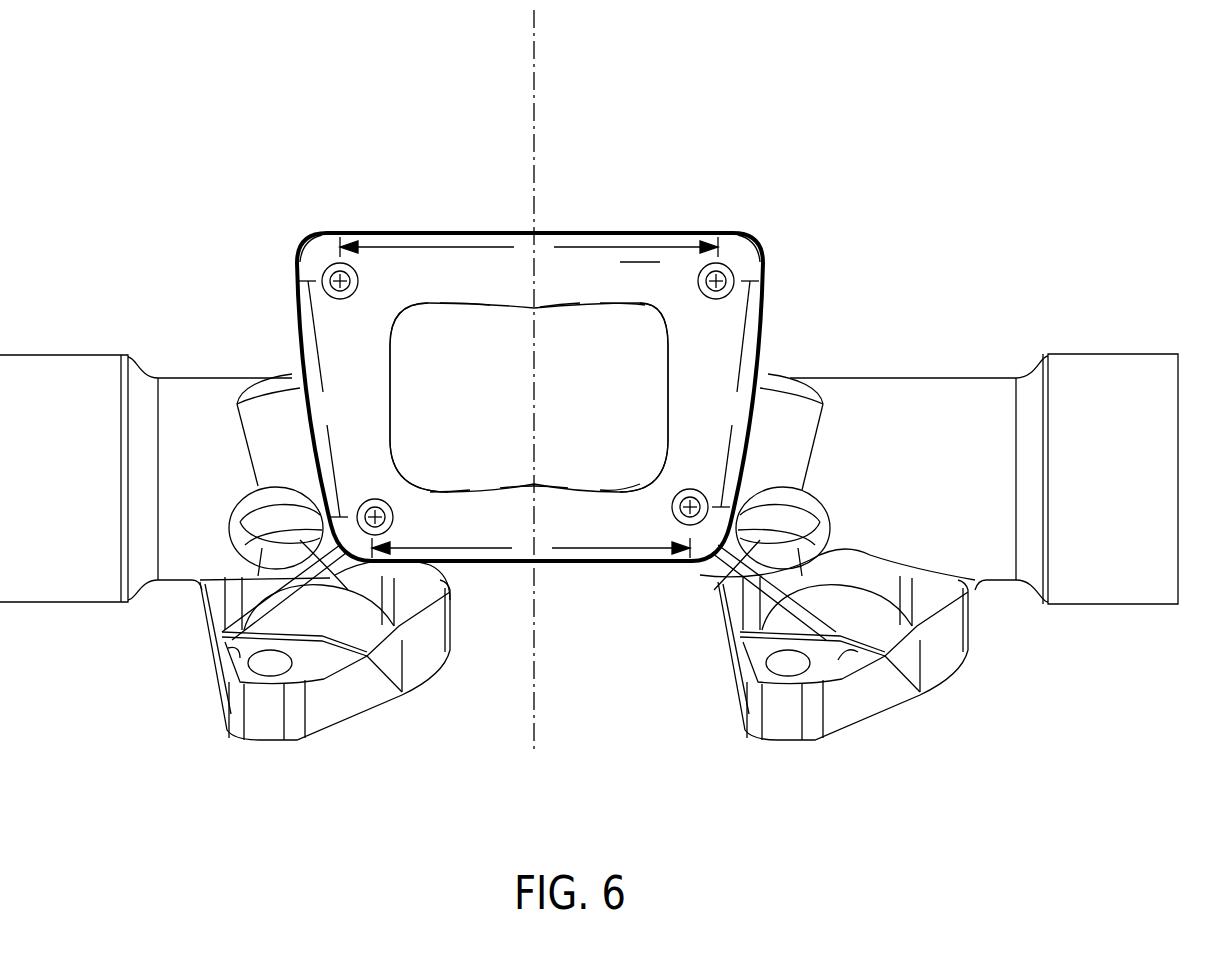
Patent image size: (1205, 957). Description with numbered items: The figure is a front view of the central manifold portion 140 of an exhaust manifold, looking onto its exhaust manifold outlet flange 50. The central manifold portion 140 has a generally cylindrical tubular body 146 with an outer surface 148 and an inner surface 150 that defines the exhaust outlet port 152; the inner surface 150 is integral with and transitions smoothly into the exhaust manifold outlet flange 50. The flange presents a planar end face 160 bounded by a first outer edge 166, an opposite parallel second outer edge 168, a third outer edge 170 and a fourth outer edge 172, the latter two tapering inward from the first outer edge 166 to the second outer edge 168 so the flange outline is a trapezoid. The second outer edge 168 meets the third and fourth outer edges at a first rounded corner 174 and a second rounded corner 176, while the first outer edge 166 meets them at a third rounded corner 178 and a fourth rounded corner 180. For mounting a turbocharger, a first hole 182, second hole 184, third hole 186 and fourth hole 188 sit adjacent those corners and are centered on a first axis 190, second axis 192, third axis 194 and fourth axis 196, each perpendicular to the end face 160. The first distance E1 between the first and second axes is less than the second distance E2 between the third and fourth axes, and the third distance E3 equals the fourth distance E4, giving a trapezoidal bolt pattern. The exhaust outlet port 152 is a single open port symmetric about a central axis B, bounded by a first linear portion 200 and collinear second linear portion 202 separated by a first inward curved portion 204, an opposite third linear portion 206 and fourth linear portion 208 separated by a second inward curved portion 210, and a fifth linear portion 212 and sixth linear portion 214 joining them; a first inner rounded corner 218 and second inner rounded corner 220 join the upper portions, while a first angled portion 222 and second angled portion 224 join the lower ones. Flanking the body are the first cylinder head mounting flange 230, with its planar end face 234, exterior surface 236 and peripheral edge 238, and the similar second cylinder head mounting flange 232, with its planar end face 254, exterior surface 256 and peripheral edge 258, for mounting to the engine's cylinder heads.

The central manifold portion 140 is at (160, 112).
The tubular body 146 is at (170, 354).
The outer surface 148 is at (921, 393).
The inner surface 150 is at (451, 325).
The exhaust outlet port 152 is at (571, 478).
The planar end face 160 is at (631, 268).
The first outer edge 166 is at (588, 241).
The second outer edge 168 is at (519, 564).
The third outer edge 170 is at (292, 385).
The fourth outer edge 172 is at (750, 406).
The first rounded corner 174 is at (225, 638).
The second rounded corner 176 is at (701, 570).
The third rounded corner 178 is at (311, 250).
The fourth rounded corner 180 is at (757, 254).
The first hole 182 is at (368, 498).
The second hole 184 is at (686, 489).
The third hole 186 is at (358, 284).
The fourth hole 188 is at (735, 283).
The first axis 190 is at (360, 512).
The second axis 192 is at (708, 503).
The third axis 194 is at (328, 284).
The fourth axis 196 is at (717, 280).
The first linear portion 200 is at (463, 300).
The second linear portion 202 is at (617, 300).
The first inward curved portion 204 is at (556, 302).
The third linear portion 206 is at (453, 494).
The fourth linear portion 208 is at (612, 498).
The second inward curved portion 210 is at (524, 488).
The fifth linear portion 212 is at (392, 366).
The sixth linear portion 214 is at (666, 387).
The first inner rounded corner 218 is at (402, 323).
The second inner rounded corner 220 is at (652, 320).
The first angled portion 222 is at (417, 460).
The second angled portion 224 is at (635, 465).
The first cylinder head mounting flange 230 is at (932, 722).
The second cylinder head mounting flange 232 is at (188, 740).
The planar end face 234 is at (862, 722).
The exterior surface 236 is at (856, 698).
The peripheral edge 238 is at (940, 662).
The planar end face 254 is at (334, 735).
The exterior surface 256 is at (230, 656).
The peripheral edge 258 is at (356, 700).
The exhaust manifold outlet flange 50 is at (538, 224).
The central axis B is at (538, 54).
The first distance E1 is at (529, 247).
The second distance E2 is at (531, 548).
The third distance E3 is at (323, 399).
The fourth distance E4 is at (735, 394).